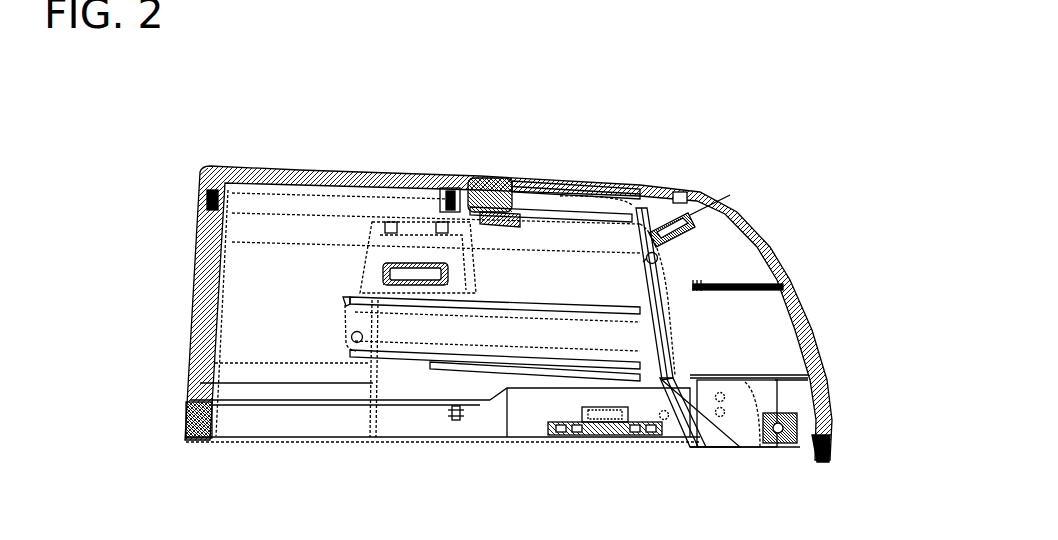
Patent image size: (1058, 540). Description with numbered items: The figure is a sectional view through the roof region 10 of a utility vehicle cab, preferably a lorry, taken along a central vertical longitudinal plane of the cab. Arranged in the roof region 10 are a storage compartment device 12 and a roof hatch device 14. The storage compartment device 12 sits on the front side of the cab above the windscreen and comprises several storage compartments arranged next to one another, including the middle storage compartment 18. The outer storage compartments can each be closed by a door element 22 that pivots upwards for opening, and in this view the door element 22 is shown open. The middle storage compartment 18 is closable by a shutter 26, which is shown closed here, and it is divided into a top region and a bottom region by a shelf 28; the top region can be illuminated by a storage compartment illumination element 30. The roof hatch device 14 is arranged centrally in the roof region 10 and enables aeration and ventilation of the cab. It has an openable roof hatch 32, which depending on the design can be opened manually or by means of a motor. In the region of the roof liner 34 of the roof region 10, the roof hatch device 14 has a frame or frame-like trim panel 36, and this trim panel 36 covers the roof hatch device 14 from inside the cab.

The roof region 10 is at (504, 88).
The storage compartment device 12 is at (641, 405).
The roof hatch device 14 is at (460, 180).
The middle storage compartment 18 is at (765, 312).
The door element 22 is at (533, 222).
The shutter 26 is at (645, 310).
The shelf 28 is at (740, 285).
The storage compartment illumination element 30 is at (687, 235).
The roof hatch 32 is at (548, 180).
The roof liner 34 is at (318, 180).
The trim panel 36 is at (452, 210).